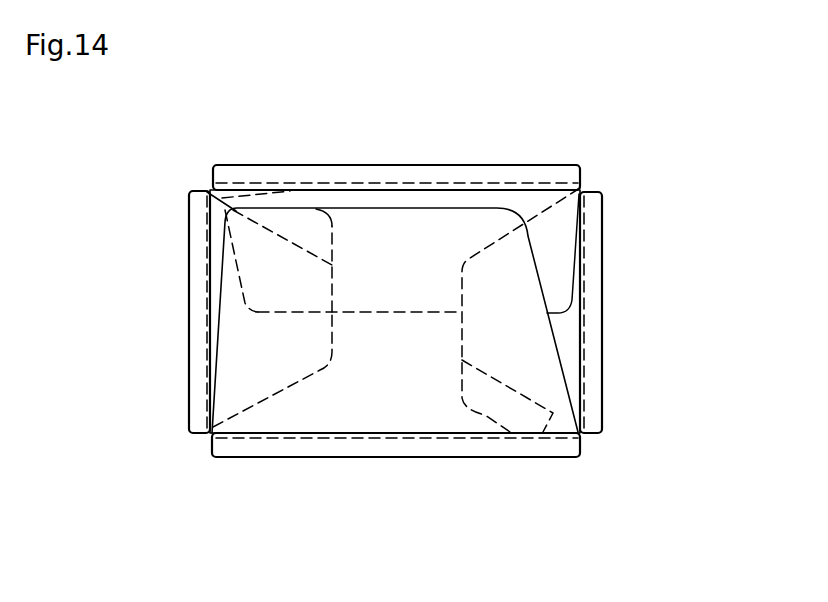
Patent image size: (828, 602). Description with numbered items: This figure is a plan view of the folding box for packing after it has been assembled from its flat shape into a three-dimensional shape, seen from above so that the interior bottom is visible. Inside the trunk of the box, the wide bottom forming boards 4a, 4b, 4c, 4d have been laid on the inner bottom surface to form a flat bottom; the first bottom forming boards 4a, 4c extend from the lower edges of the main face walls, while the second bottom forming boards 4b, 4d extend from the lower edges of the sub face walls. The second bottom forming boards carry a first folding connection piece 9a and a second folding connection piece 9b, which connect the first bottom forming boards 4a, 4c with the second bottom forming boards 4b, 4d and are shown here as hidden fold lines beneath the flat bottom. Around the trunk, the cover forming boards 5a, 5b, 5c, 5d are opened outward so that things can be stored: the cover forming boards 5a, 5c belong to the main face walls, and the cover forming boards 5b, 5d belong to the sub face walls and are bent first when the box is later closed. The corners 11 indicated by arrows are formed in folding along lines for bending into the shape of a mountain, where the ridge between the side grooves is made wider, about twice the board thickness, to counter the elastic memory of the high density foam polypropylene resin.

The first bottom forming board 4a is at (392, 210).
The second bottom forming board 4b is at (536, 226).
The first bottom forming board 4c is at (398, 313).
The second bottom forming board 4d is at (268, 396).
The cover forming board 5a is at (422, 452).
The first cover forming board 5b is at (597, 313).
The cover forming board 5c is at (367, 178).
The first cover forming board 5d is at (199, 308).
The first folding connection piece 9a is at (497, 400).
The second folding connection piece 9b is at (303, 222).
The corner 11 is at (201, 182).